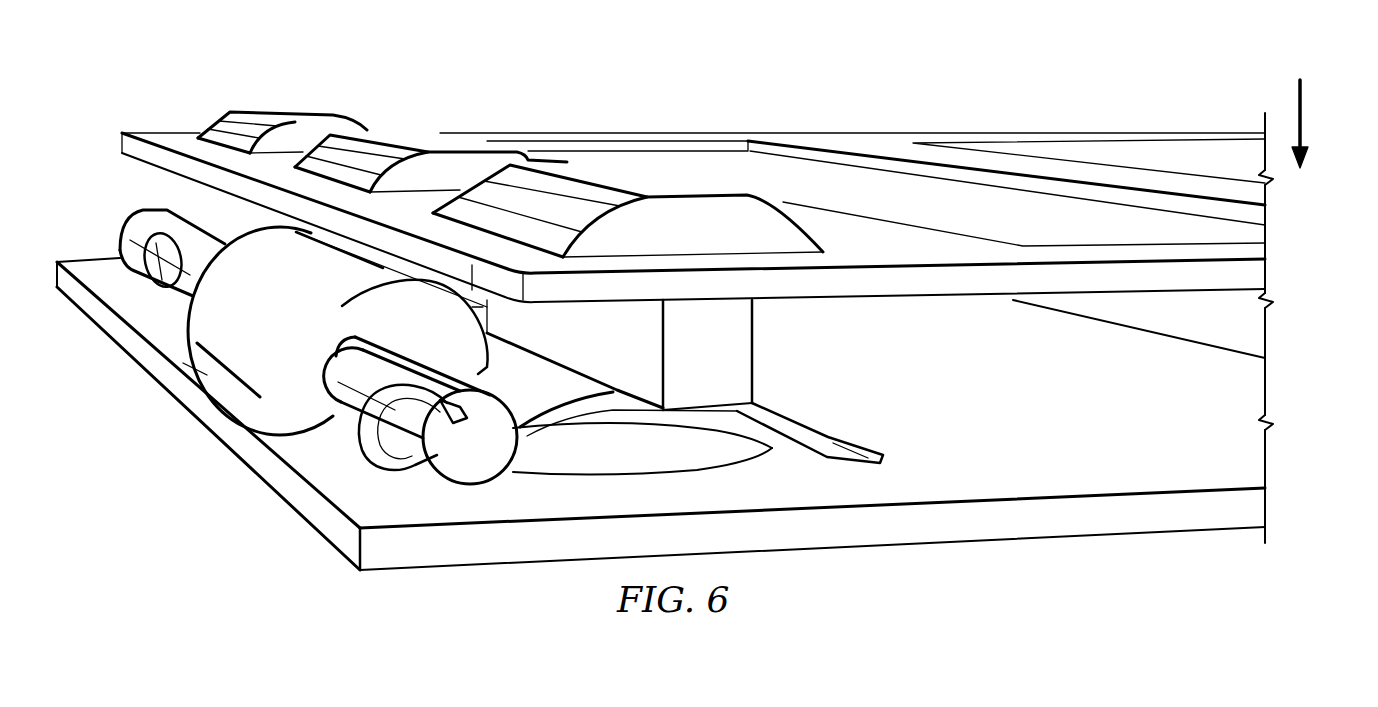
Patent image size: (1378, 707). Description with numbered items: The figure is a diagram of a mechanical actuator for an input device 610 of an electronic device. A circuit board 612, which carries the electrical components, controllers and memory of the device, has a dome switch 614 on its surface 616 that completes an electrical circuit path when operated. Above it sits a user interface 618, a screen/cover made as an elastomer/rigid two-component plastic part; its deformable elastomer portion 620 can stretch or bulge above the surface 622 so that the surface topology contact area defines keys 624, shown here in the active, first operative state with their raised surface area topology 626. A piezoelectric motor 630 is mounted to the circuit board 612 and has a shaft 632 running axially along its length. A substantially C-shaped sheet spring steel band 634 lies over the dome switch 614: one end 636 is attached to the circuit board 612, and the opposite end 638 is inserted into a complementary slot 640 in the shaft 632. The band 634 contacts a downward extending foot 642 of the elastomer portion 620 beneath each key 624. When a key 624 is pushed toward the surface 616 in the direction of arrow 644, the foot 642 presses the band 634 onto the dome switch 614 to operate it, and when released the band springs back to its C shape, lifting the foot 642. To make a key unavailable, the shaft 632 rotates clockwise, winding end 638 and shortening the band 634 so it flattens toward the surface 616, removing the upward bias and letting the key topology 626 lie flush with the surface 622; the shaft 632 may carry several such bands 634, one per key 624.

The input device 610 is at (418, 60).
The circuit board 612 is at (1037, 542).
The dome switch 614 is at (695, 452).
The surface of the circuit board 616 is at (1130, 478).
The user interface 618 is at (980, 106).
The elastomer portion 620 is at (190, 100).
The surface of the user interface 622 is at (905, 232).
The key 624 is at (322, 113).
The surface area topology of the key 626 is at (287, 111).
The piezoelectric motor 630 is at (180, 343).
The shaft 632 is at (187, 281).
The sheet spring steel band 634 is at (104, 210).
The end of the sheet spring steel band 636 is at (852, 460).
The opposite end of the sheet spring steel band 638 is at (370, 445).
The slot 640 is at (480, 466).
The foot 642 is at (740, 336).
The direction arrow 644 is at (1305, 116).